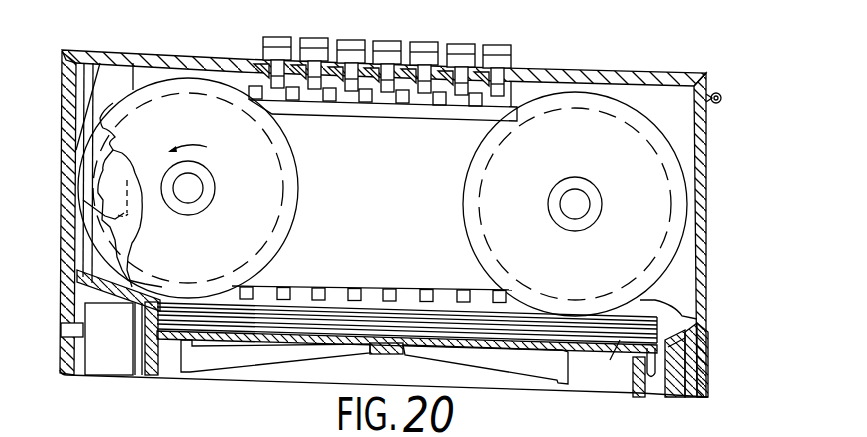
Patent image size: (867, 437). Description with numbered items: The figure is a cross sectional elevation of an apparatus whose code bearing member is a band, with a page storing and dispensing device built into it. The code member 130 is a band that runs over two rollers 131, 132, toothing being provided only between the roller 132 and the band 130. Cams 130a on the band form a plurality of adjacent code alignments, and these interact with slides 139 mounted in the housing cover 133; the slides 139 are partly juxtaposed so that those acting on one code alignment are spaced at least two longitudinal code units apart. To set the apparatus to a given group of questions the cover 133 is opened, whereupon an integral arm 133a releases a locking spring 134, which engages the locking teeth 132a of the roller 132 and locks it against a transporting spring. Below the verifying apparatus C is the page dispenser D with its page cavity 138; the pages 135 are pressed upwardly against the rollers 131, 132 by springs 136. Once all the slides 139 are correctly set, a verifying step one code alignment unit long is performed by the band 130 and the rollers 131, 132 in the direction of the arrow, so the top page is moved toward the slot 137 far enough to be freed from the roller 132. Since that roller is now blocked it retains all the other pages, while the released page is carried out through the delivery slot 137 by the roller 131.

The verifying apparatus C is at (652, 64).
The page dispenser D is at (228, 386).
The code member 130 is at (372, 288).
The cams 130a is at (400, 100).
The roller 131 is at (677, 177).
The roller 132 is at (290, 171).
The locking teeth 132a is at (128, 245).
The housing cover 133 is at (593, 78).
The integral arm 133a is at (98, 160).
The locking spring 134 is at (118, 322).
The pages 135 is at (616, 373).
The springs 136 is at (538, 373).
The delivery slot 137 is at (702, 321).
The page cavity 138 is at (407, 300).
The slides 139 is at (263, 45).